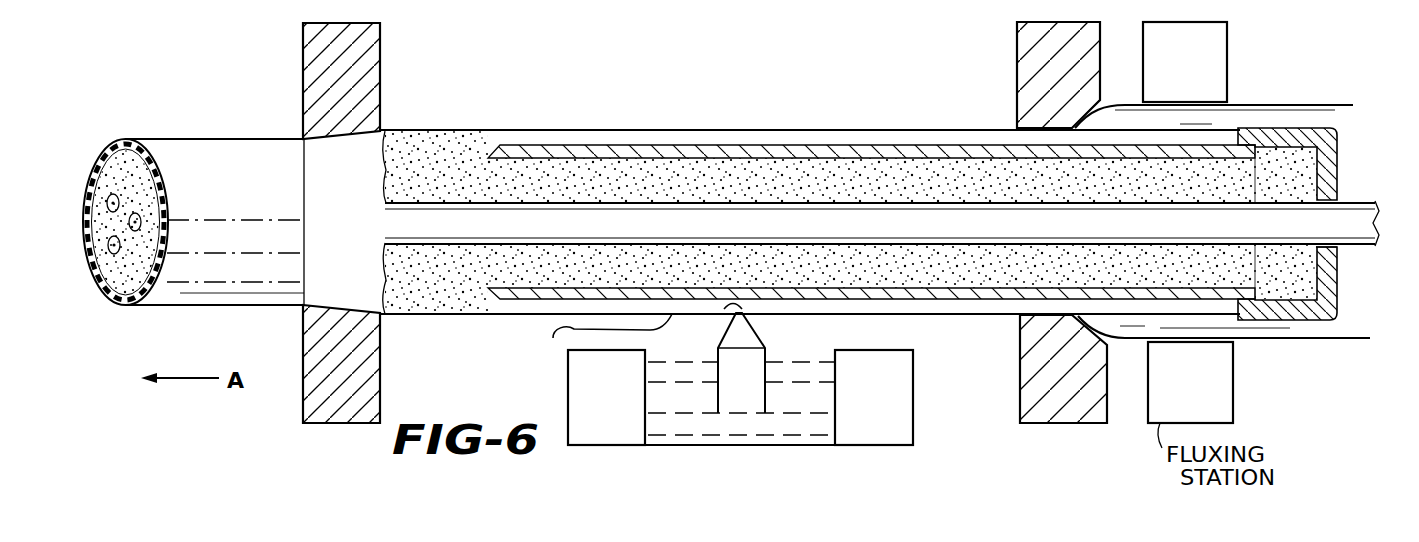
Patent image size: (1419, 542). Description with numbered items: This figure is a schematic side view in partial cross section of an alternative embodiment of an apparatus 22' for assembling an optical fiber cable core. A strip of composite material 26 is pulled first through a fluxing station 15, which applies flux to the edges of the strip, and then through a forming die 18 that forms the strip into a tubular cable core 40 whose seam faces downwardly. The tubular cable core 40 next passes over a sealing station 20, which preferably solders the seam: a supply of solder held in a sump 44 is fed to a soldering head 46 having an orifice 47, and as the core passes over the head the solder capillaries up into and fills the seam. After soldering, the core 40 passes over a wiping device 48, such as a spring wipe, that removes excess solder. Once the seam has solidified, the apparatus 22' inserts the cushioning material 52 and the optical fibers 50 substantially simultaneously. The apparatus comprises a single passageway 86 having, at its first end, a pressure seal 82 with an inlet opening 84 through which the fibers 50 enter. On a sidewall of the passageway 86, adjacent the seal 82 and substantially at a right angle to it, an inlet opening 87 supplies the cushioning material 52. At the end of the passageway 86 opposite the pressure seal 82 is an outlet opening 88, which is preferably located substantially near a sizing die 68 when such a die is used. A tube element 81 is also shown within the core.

The fluxing station 15 is at (1170, 0).
The forming die 18 is at (1058, 25).
The sealing station 20 is at (779, 454).
The apparatus for assembling the cable core 22' is at (810, 193).
The composite material 26 is at (1323, 112).
The tubular cable core 40 is at (238, 148).
The sump 44 is at (676, 420).
The soldering head 46 is at (757, 335).
The orifice 47 is at (727, 312).
The wiping device 48 is at (553, 338).
The optical fiber 50 is at (112, 224).
The cushioning material 52 is at (117, 140).
The sizing die 68 is at (340, 423).
The inner tube 81 is at (952, 138).
The pressure seal 82 is at (1342, 190).
The inlet opening 84 is at (1346, 253).
The passageway 86 is at (1311, 321).
The inlet opening 87 is at (1271, 148).
The outlet opening 88 is at (493, 178).